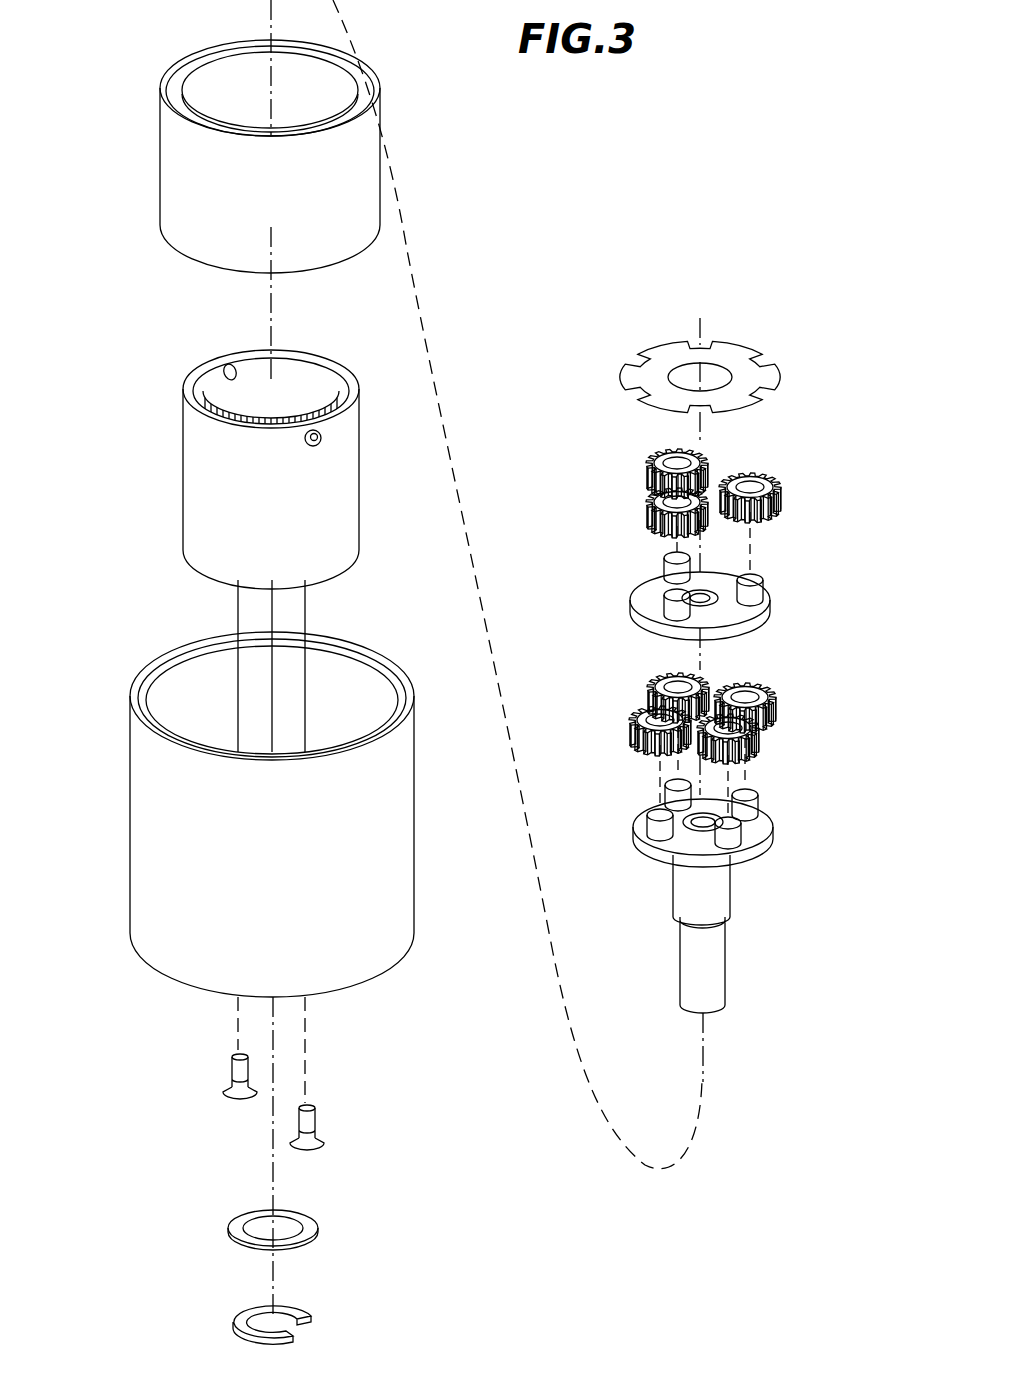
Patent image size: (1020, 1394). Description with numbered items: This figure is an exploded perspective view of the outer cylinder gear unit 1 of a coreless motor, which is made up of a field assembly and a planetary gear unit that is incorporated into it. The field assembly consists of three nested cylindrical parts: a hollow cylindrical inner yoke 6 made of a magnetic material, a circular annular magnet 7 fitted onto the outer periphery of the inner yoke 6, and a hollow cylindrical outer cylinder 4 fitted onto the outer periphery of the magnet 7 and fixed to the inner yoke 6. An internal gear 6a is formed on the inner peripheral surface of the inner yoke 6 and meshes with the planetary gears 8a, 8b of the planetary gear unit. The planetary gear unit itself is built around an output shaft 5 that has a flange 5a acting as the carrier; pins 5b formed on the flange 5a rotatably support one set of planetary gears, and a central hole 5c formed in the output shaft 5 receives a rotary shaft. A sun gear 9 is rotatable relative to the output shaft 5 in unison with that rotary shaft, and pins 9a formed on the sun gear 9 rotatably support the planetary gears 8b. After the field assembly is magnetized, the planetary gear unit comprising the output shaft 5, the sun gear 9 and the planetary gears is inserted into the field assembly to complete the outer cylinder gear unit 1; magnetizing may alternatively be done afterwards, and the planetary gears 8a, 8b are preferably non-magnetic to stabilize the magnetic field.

The outer cylinder gear unit 1 is at (494, 196).
The outer cylinder 4 is at (140, 850).
The output shaft 5 is at (717, 950).
The flange 5a is at (760, 826).
The pins 5b is at (753, 808).
The central hole 5c is at (688, 826).
The inner yoke 6 is at (190, 482).
The internal gear 6a is at (222, 380).
The magnet 7 is at (177, 178).
The planetary gears 8a is at (775, 708).
The planetary gears 8b is at (780, 490).
The sun gear 9 is at (770, 620).
The pins 9a is at (760, 588).